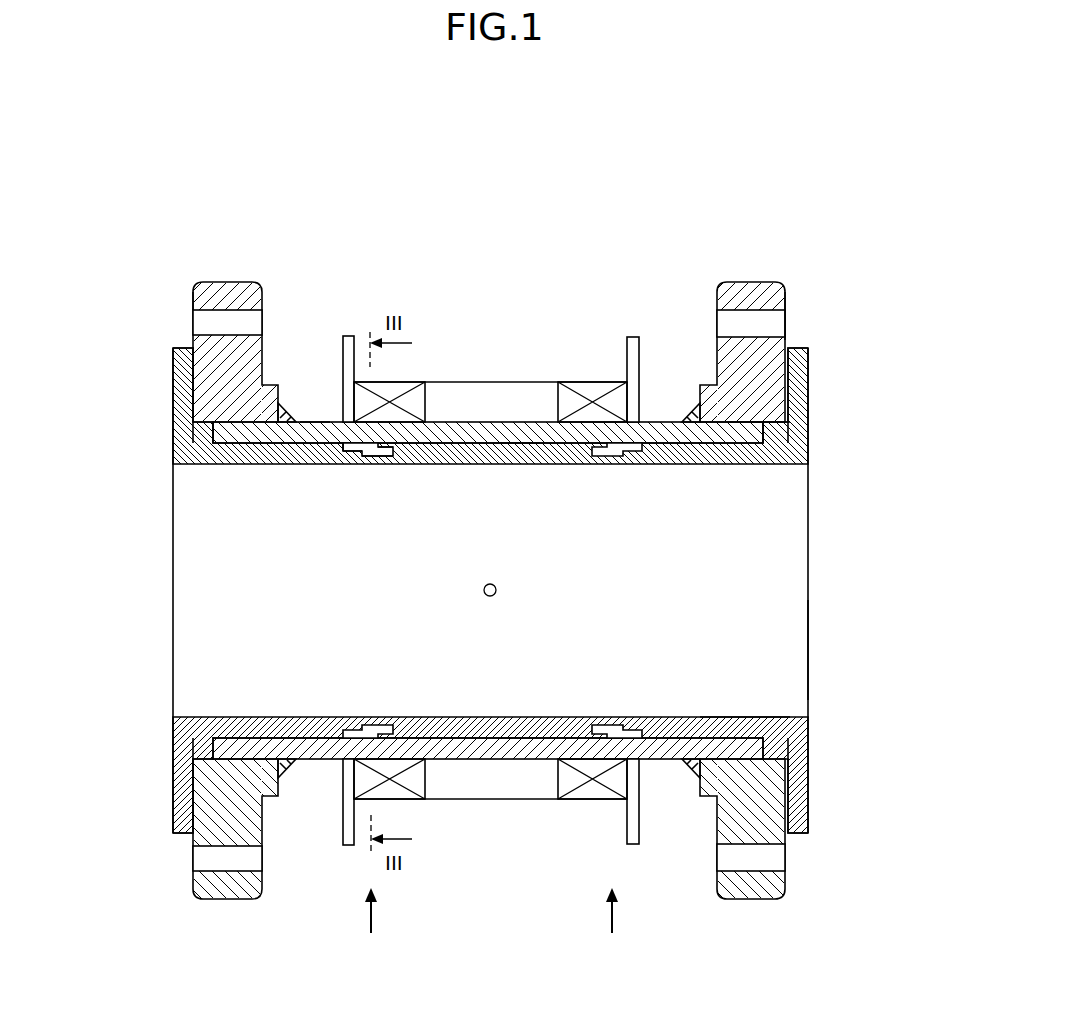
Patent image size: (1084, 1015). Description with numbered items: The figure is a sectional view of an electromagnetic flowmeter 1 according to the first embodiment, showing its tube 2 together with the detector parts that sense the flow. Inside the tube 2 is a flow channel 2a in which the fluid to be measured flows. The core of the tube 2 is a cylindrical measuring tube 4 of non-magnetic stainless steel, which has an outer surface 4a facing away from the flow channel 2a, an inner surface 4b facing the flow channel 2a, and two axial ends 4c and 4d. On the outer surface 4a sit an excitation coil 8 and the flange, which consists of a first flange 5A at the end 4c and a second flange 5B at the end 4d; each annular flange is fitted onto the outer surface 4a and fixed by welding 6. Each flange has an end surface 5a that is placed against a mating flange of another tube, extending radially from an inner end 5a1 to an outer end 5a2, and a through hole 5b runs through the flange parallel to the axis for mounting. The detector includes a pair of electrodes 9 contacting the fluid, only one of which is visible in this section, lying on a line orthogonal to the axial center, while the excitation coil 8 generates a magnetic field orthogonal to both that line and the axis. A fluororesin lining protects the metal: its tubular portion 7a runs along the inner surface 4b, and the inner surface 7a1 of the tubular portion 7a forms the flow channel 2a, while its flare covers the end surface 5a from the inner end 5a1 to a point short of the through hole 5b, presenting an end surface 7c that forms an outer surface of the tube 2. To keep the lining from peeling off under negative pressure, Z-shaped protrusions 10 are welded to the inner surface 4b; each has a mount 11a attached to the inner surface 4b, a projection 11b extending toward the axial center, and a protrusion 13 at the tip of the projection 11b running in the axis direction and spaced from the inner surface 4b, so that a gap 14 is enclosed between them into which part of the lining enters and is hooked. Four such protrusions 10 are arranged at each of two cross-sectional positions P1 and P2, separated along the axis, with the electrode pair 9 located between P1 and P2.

The electromagnetic flowmeter 1 is at (785, 186).
The tube 2 is at (757, 281).
The flow channel 2a is at (808, 646).
The measuring tube 4 is at (318, 760).
The outer surface 4a is at (316, 420).
The inner surface 4b is at (517, 447).
The end 4c is at (766, 445).
The end 4d is at (215, 444).
The first flange 5A is at (718, 284).
The second flange 5B is at (198, 284).
The end surface 5a is at (193, 300).
The end 5a1 is at (770, 428).
The end 5a2 is at (793, 300).
The through hole 5b is at (218, 320).
The welding 6 is at (290, 412).
The tubular portion 7a is at (745, 557).
The inner surface 7a1 is at (775, 717).
The end surface 7c is at (173, 365).
The excitation coil 8 is at (581, 382).
The electrode 9 is at (484, 590).
The protrusion 10 is at (340, 456).
The mount 11a is at (396, 458).
The projection 11b is at (378, 458).
The protrusion 13 is at (352, 457).
The gap 14 is at (342, 446).
The cross-sectional position P1 is at (368, 925).
The cross-sectional position P2 is at (610, 925).